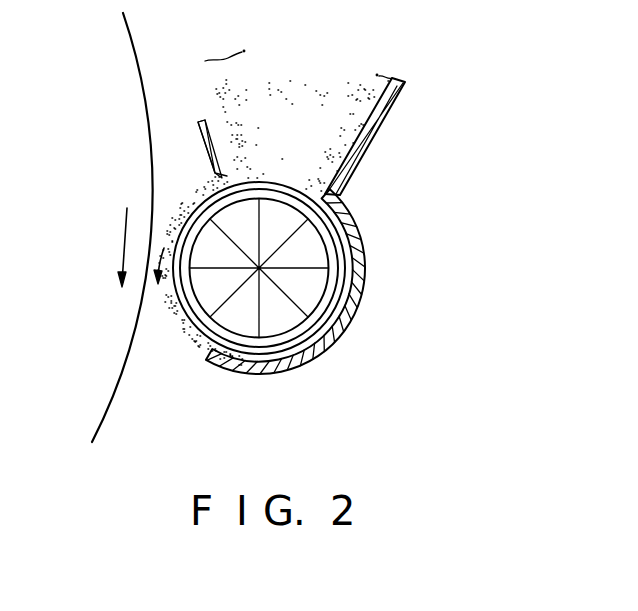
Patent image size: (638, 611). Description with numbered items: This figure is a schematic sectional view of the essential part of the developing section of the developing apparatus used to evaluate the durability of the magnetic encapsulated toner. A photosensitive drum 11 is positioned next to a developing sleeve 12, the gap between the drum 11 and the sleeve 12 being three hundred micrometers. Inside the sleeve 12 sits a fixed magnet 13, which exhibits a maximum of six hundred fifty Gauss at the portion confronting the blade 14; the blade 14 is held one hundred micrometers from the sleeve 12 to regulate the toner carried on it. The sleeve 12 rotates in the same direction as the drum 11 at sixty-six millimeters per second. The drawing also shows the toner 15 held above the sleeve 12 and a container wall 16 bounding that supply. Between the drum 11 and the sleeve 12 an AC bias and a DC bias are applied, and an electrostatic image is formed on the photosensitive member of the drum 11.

The drum 11 is at (128, 77).
The sleeve 12 is at (188, 318).
The fixed magnet 13 is at (322, 282).
The blade 14 is at (207, 143).
The developer (toner) 15 is at (320, 113).
The developer container wall 16 is at (396, 102).